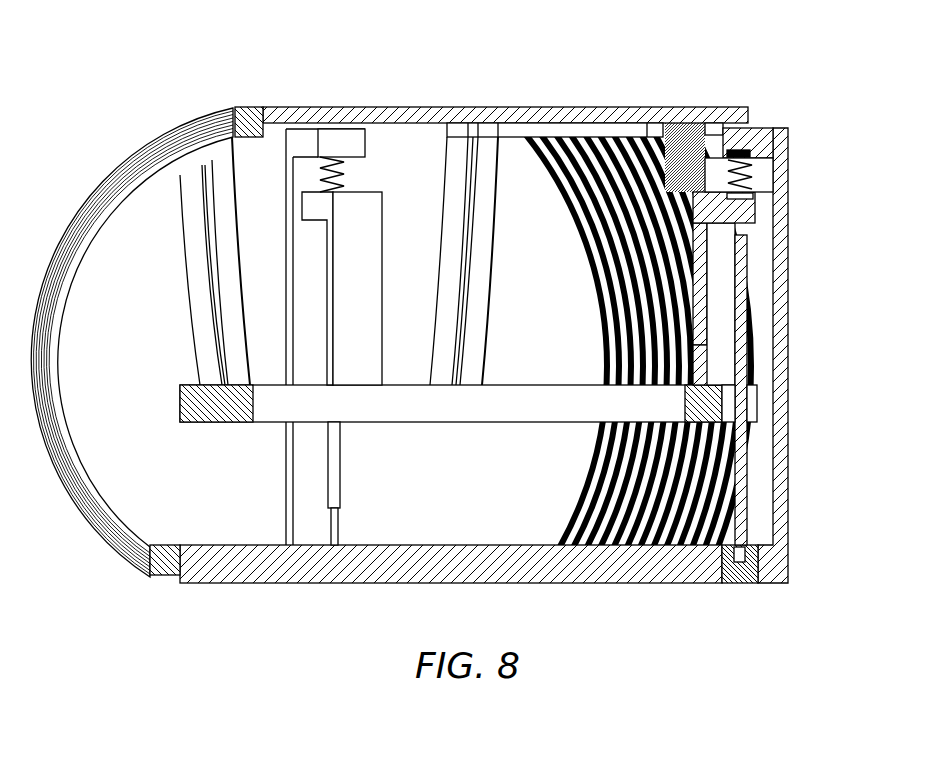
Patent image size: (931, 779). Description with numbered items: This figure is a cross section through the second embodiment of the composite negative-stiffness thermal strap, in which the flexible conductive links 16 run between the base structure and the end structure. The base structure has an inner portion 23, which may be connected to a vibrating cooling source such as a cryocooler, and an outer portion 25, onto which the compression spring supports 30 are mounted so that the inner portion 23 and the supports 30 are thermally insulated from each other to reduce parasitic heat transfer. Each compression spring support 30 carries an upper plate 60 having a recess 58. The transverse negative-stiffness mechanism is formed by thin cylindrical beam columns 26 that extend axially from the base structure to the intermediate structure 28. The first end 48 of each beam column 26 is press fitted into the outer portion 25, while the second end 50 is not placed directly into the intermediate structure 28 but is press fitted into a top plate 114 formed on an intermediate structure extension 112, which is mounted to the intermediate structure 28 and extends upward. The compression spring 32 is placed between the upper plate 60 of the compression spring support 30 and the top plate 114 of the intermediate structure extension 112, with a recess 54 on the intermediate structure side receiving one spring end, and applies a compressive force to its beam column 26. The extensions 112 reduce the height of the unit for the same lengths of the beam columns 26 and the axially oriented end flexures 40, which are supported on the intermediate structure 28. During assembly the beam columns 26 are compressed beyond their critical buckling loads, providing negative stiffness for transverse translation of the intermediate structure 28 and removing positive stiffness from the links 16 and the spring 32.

The flexible conductive link 16 is at (97, 200).
The inner portion of the base structure 23 is at (447, 548).
The outer portion of the base structure 25 is at (738, 583).
The beam column 26 is at (340, 463).
The intermediate structure 28 is at (450, 408).
The compression spring support 30 is at (303, 285).
The compression spring 32 is at (345, 172).
The axially oriented end flexure 40 is at (202, 283).
The first end of the beam column 48 is at (745, 555).
The second end of the beam column 50 is at (745, 208).
The recess 54 is at (755, 197).
The recess 58 is at (731, 150).
The upper plate 60 is at (342, 140).
The intermediate structure extension 112 is at (365, 272).
The top plate 114 is at (315, 208).